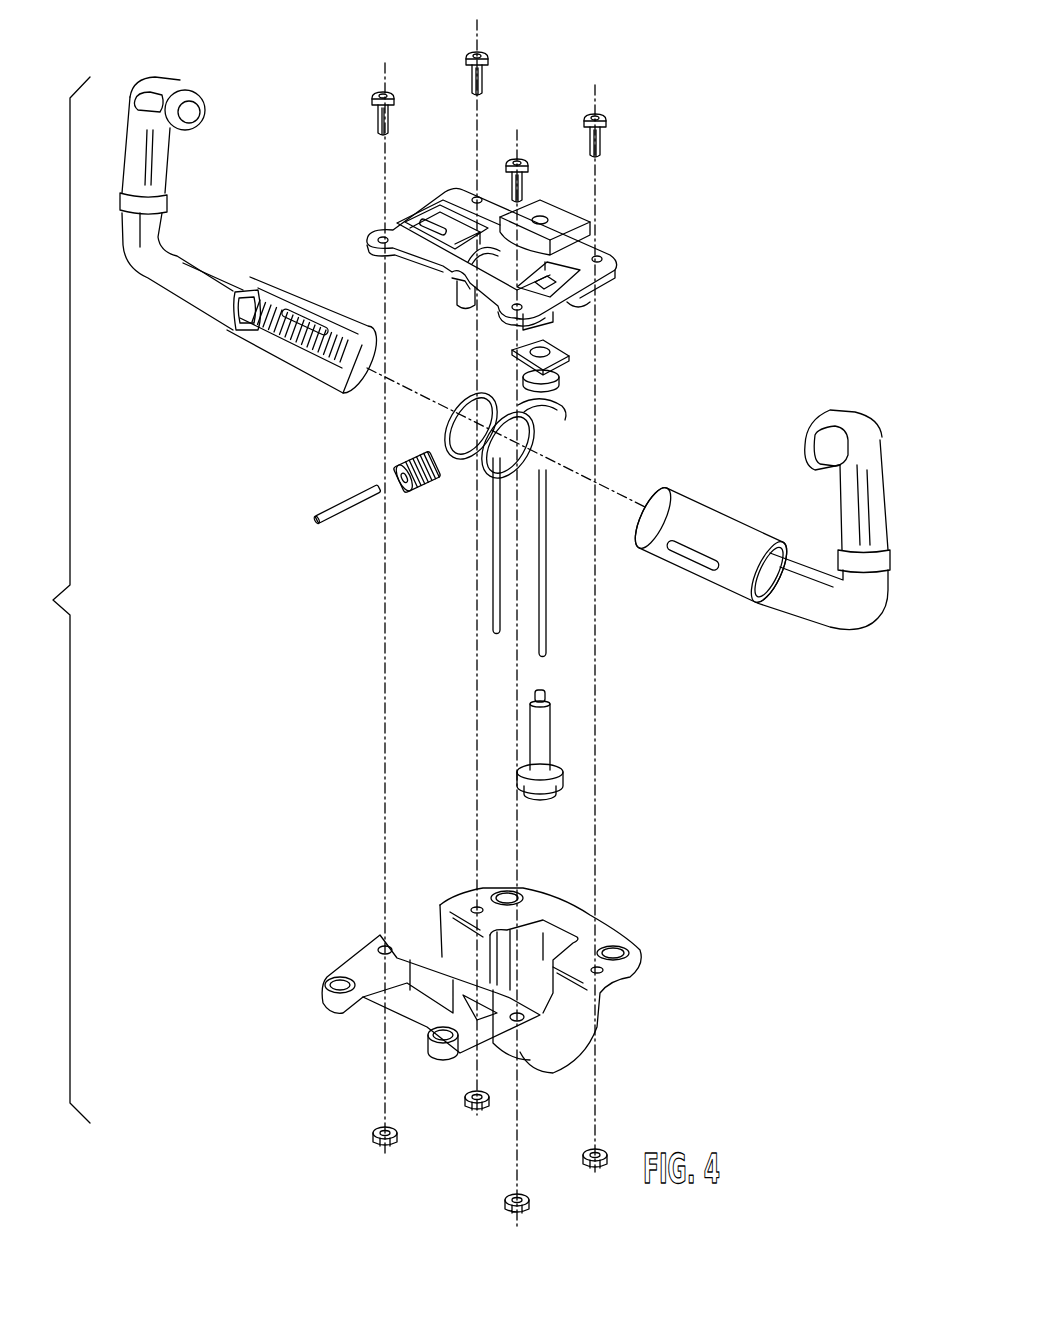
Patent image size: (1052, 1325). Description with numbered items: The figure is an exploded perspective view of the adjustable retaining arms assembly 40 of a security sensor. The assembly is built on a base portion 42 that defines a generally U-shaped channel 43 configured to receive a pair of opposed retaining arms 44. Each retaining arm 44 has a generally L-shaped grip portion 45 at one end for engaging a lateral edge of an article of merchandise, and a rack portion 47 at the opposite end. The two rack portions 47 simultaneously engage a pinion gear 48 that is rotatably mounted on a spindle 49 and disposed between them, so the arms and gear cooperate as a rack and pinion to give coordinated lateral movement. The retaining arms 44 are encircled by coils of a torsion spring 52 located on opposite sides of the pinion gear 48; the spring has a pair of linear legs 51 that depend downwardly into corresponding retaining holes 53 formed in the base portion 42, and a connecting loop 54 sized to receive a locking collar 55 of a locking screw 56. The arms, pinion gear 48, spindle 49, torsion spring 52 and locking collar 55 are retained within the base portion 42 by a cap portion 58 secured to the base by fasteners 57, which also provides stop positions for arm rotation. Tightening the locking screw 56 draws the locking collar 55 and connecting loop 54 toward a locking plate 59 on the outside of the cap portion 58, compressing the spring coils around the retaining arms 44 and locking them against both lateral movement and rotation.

The adjustable retaining arms assembly 40 is at (58, 600).
The base portion 42 is at (504, 954).
The U-shaped channel 43 is at (573, 1025).
The retaining arms 44 is at (505, 394).
The grip portion 45 is at (843, 507).
The rack portion 47 is at (705, 580).
The pinion gear 48 is at (430, 490).
The spindle 49 is at (342, 520).
The linear legs 51 is at (537, 635).
The torsion spring 52 is at (521, 530).
The retaining holes 53 is at (507, 890).
The connecting loop 54 is at (562, 397).
The locking collar 55 is at (563, 343).
The locking screw 56 is at (545, 737).
The fasteners 57 is at (390, 123).
The cap portion 58 is at (390, 273).
The locking plate 59 is at (563, 217).